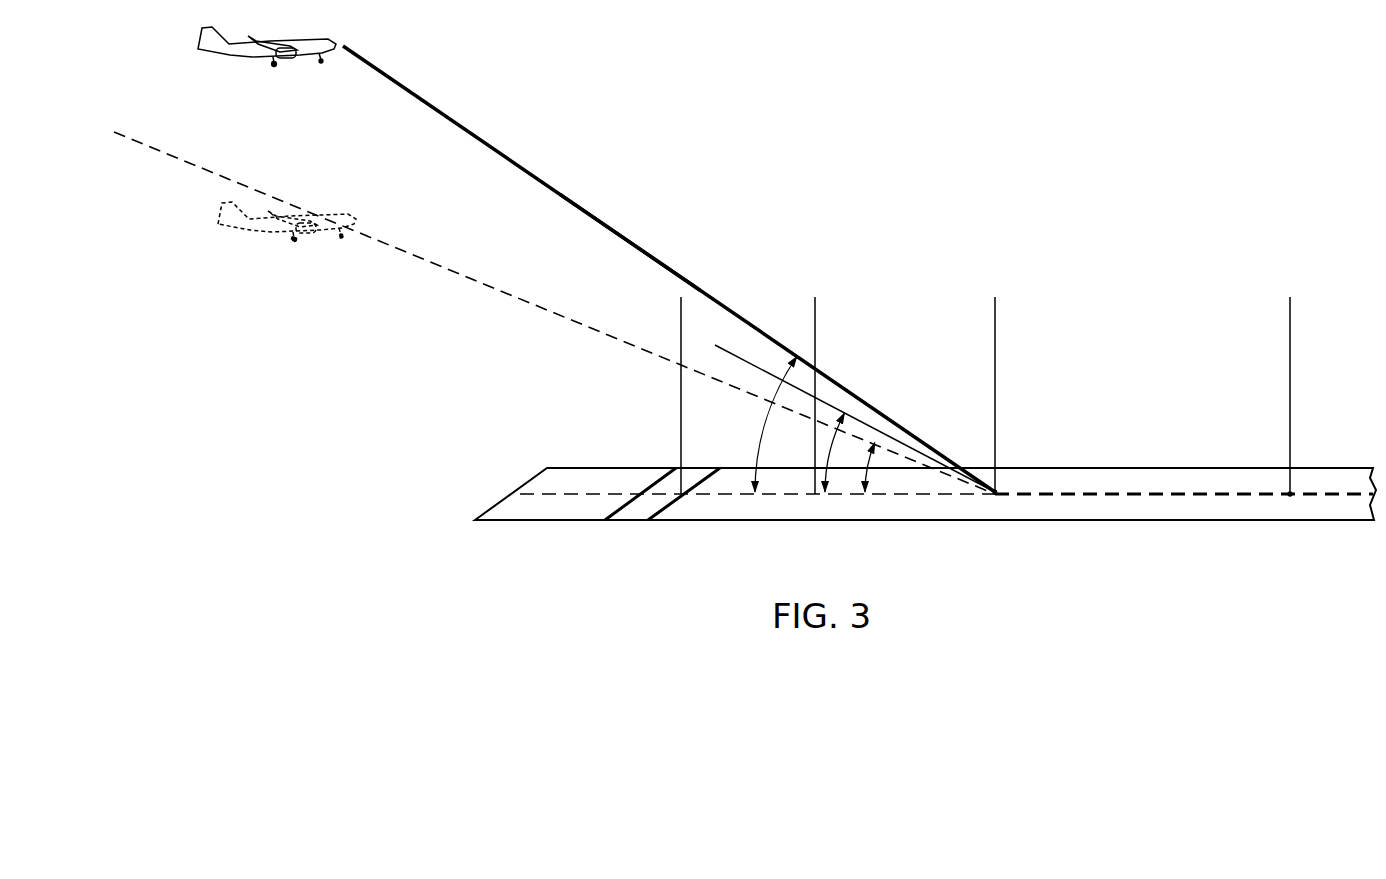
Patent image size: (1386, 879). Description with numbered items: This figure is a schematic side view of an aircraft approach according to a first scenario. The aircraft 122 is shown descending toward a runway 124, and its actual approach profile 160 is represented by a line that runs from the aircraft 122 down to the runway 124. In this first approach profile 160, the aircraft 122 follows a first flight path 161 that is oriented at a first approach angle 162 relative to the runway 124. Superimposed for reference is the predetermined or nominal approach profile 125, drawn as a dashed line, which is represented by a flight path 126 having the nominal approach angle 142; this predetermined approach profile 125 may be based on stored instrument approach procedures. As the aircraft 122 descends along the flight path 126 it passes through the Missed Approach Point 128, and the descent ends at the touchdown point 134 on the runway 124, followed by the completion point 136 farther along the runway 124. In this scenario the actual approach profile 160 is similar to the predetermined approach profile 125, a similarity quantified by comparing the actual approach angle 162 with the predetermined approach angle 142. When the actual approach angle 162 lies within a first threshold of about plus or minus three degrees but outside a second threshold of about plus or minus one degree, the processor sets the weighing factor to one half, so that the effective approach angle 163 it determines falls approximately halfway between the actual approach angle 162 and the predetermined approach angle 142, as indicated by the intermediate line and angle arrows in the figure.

The aircraft 122 is at (245, 62).
The runway 124 is at (1175, 462).
The approach profile 125 is at (487, 283).
The flight path 126 is at (515, 298).
The Missed Approach Point 128 is at (422, 260).
The touchdown point 134 is at (995, 492).
The completion point 136 is at (1290, 494).
The approach angle 142 is at (857, 475).
The approach profile 160 is at (545, 180).
The first flight path 161 is at (645, 216).
The first approach angle 162 is at (770, 440).
The effective approach angle 163 is at (823, 440).